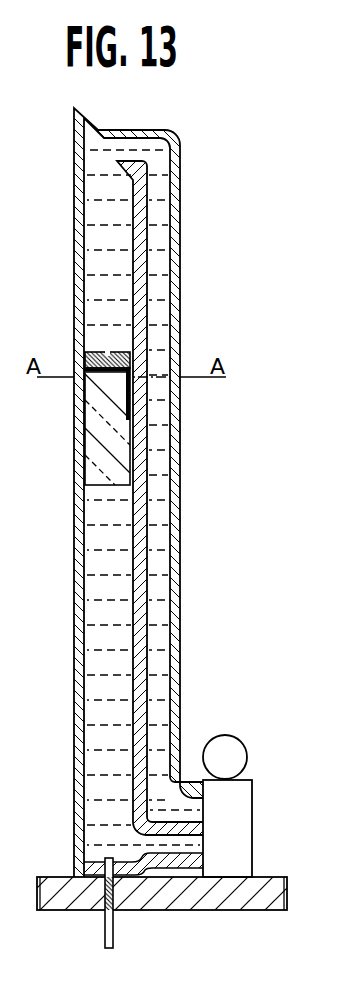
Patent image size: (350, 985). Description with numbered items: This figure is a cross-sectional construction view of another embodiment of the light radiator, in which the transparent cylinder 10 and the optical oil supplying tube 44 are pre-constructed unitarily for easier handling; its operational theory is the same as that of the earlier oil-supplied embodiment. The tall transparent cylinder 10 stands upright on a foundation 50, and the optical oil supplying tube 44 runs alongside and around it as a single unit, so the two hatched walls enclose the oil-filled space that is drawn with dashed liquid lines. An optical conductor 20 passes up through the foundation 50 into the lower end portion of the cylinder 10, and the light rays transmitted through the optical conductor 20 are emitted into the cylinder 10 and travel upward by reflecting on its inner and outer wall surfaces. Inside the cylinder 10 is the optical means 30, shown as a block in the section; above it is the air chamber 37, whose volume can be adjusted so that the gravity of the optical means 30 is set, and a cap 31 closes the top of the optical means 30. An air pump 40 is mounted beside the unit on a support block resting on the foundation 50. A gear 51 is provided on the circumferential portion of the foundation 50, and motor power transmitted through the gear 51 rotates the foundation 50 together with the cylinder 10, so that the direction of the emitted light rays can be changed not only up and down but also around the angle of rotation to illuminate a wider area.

The transparent cylinder 10 is at (80, 507).
The optical conductor 20 is at (114, 935).
The optical means 30 is at (102, 473).
The cap of float block 31 is at (126, 408).
The air chamber 37 is at (97, 385).
The air pump 40 is at (243, 757).
The optical oil supplying tube 44 is at (176, 622).
The foundation 50 is at (40, 875).
The gear 51 is at (67, 903).